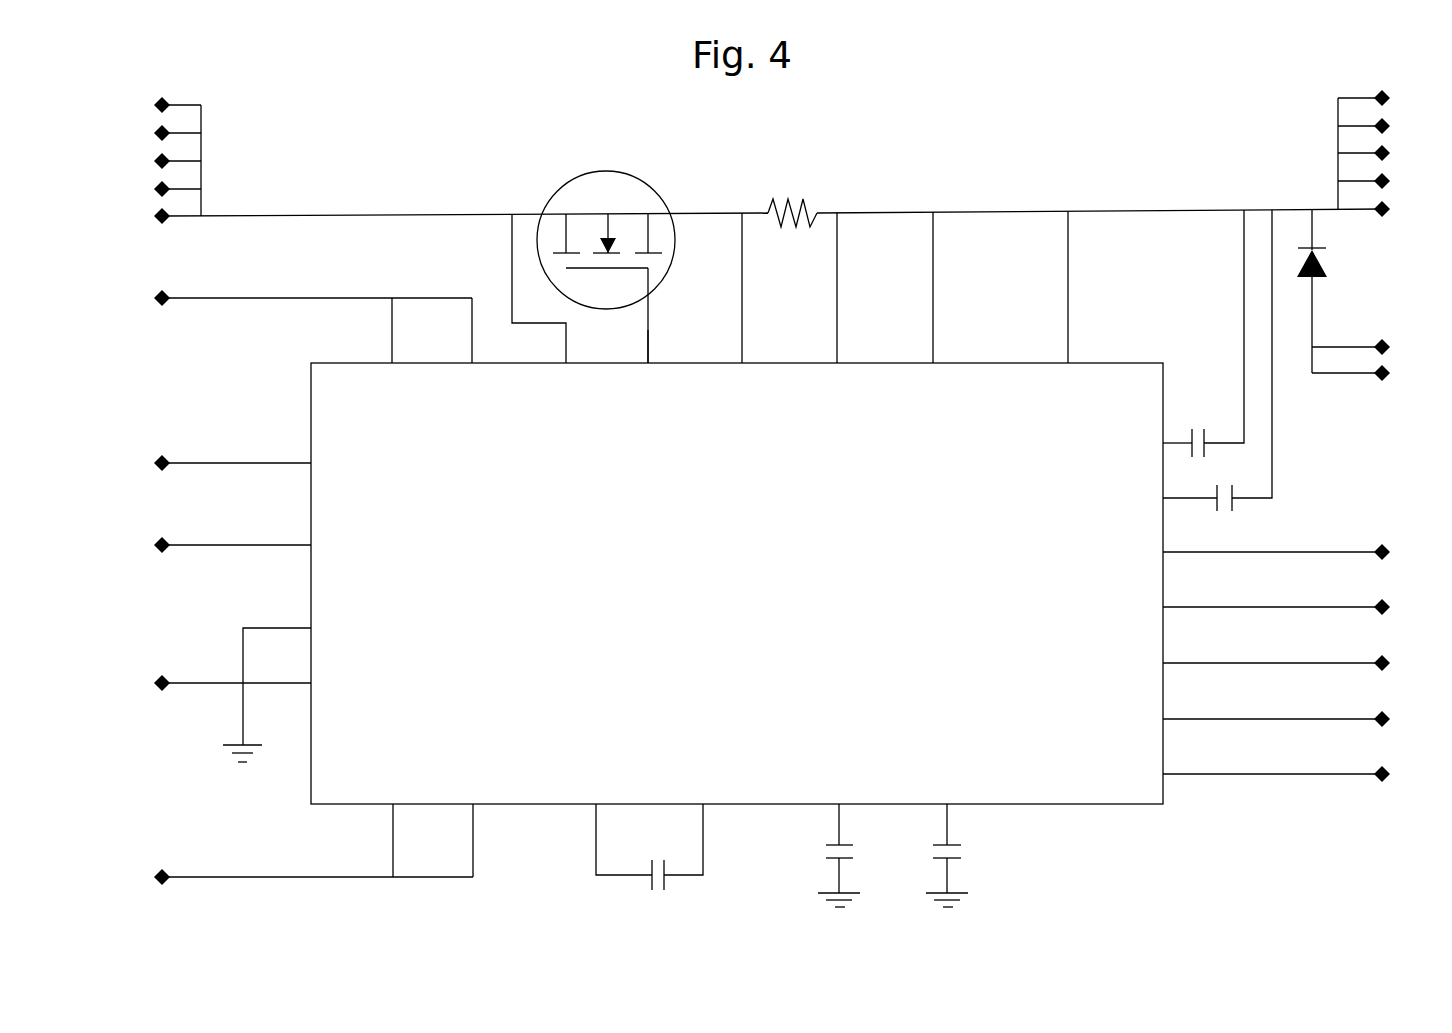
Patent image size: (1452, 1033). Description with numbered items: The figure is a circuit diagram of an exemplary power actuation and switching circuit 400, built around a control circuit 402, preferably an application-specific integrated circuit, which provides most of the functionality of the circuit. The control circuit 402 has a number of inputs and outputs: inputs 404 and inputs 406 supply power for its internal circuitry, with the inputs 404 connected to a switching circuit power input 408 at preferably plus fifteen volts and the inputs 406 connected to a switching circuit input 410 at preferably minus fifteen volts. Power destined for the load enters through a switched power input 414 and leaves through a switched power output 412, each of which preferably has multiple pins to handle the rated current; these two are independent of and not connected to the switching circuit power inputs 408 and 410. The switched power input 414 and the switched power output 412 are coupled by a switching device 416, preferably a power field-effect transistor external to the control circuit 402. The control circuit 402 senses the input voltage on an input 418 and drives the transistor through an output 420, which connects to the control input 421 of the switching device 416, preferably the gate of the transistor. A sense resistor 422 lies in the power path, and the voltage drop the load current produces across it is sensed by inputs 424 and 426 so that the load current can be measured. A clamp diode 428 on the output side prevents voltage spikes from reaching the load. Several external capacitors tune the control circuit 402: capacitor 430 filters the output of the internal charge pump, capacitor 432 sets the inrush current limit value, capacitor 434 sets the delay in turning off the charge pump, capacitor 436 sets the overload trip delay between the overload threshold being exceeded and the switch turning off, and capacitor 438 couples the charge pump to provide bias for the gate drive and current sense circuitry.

The power actuation and switching circuit 400 is at (405, 165).
The control circuit 402 is at (681, 583).
The inputs 404 is at (472, 363).
The inputs 406 is at (393, 806).
The switching circuit power input 408 is at (313, 276).
The switching circuit input 410 is at (313, 874).
The switched power output 412 is at (1309, 136).
The switched power input 414 is at (229, 139).
The switching device 416 is at (654, 228).
The input 418 is at (524, 288).
The output 420 is at (610, 345).
The control input 421 is at (691, 315).
The sense resistor 422 is at (845, 190).
The input 424 is at (705, 288).
The input 426 is at (798, 287).
The clamp diode 428 is at (1368, 295).
The capacitor 430 is at (1174, 333).
The capacitor 432 is at (1259, 365).
The capacitor 434 is at (996, 855).
The capacitor 436 is at (793, 855).
The capacitor 438 is at (628, 865).